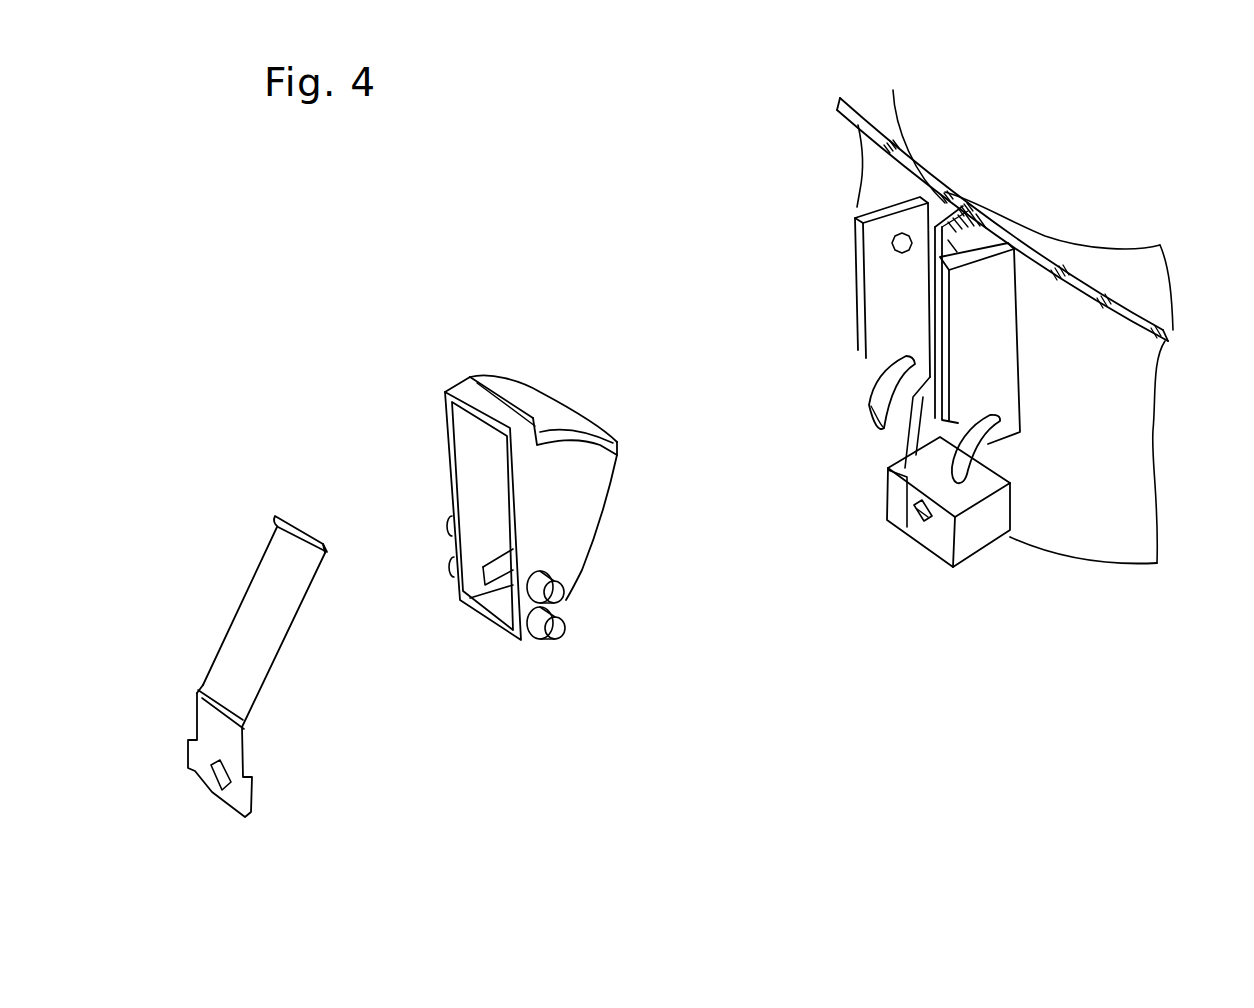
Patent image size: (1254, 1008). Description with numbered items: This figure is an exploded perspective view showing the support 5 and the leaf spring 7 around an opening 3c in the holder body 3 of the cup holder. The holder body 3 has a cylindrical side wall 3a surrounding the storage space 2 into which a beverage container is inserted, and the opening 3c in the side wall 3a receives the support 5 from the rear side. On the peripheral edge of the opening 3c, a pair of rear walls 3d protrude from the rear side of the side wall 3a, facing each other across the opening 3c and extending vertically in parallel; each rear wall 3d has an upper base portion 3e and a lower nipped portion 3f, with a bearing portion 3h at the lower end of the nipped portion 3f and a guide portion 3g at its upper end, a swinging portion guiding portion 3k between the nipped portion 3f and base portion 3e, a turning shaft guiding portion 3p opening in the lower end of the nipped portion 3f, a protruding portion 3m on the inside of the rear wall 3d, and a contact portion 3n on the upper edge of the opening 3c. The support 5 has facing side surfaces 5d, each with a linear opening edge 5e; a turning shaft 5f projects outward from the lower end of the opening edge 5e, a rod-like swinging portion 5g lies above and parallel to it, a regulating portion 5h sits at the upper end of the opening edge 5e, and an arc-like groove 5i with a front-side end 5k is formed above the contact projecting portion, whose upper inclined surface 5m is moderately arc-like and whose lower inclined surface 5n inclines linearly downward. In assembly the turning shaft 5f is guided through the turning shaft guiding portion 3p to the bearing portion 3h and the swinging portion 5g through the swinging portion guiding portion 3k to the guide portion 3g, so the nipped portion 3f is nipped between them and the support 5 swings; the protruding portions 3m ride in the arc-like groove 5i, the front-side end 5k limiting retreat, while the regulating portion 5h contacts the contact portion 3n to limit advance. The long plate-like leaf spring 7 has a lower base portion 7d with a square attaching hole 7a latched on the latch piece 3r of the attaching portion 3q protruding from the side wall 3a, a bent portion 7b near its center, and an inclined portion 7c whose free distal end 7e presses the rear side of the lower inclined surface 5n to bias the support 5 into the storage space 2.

The storage space 2 is at (1077, 223).
The holder body 3 is at (1165, 253).
The side wall 3a is at (1143, 490).
The opening 3c is at (945, 205).
The rear wall 3d is at (858, 262).
The base portion 3e is at (860, 285).
The nipped portion 3f is at (877, 427).
The guide portion 3g is at (874, 387).
The bearing portion 3h is at (903, 405).
The swinging portion guiding portion 3k is at (882, 372).
The protruding portion 3m is at (902, 233).
The contact portion 3n is at (972, 203).
The turning shaft guiding portion 3p is at (888, 475).
The attaching portion 3q is at (926, 540).
The latch piece 3r is at (913, 514).
The support 5 is at (503, 630).
The side surface 5d is at (583, 497).
The opening edge 5e is at (447, 433).
The turning shaft 5f is at (450, 567).
The swinging portion 5g is at (447, 523).
The regulating portion 5h is at (500, 372).
The arc-like groove 5i is at (600, 470).
The front-side end 5k is at (617, 443).
The upper inclined surface 5m is at (543, 403).
The lower inclined surface 5n is at (593, 540).
The leaf spring 7 is at (280, 663).
The attaching hole 7a is at (212, 783).
The bent portion 7b is at (228, 700).
The inclined portion 7c is at (277, 603).
The base portion 7d is at (223, 757).
The distal end 7e is at (328, 550).